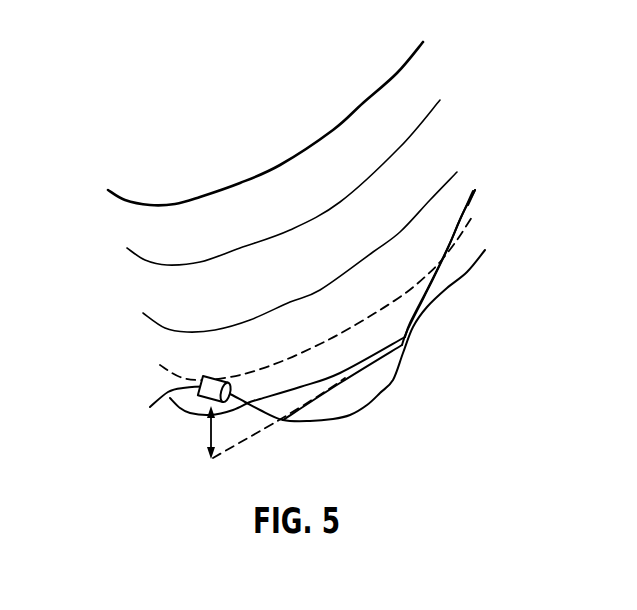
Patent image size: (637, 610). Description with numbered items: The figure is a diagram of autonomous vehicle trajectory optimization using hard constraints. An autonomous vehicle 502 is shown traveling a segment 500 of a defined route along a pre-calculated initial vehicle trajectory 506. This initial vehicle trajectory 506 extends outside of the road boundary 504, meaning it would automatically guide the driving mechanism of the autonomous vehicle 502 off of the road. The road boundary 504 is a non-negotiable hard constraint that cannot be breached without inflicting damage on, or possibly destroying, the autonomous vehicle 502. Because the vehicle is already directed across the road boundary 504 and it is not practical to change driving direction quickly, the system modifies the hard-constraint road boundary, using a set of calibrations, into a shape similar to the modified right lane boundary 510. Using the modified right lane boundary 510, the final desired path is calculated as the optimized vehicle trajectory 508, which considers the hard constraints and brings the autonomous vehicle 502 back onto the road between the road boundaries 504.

The segment 500 is at (133, 76).
The autonomous vehicle 502 is at (172, 397).
The road boundary 504 is at (465, 274).
The initial vehicle trajectory 506 is at (473, 206).
The optimized vehicle trajectory 508 is at (475, 190).
The modified right lane boundary 510 is at (242, 442).